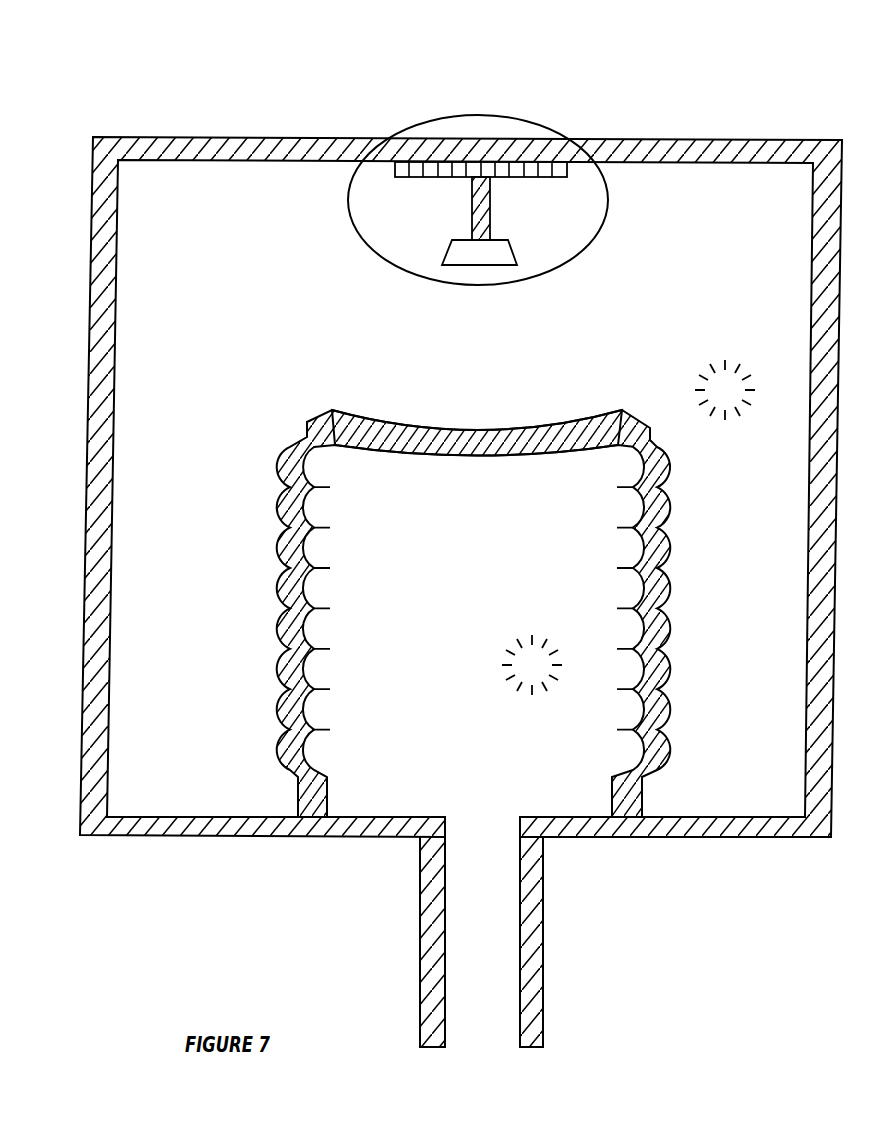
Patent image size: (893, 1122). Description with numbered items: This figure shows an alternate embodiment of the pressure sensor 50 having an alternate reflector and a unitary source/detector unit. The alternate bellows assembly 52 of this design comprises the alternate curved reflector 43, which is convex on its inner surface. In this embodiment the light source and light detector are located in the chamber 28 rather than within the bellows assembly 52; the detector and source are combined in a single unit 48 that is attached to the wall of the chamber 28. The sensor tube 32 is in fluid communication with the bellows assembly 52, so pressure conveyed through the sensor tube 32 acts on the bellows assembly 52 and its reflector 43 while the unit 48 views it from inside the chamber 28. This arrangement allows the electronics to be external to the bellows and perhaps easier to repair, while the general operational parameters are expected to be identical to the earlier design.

The pressure sensor 50 is at (428, 528).
The chamber 28 is at (190, 640).
The sensor tube 32 is at (543, 932).
The single unit 48 is at (360, 235).
The alternate curved reflector 43 is at (419, 432).
The alternate bellows assembly 52 is at (277, 700).